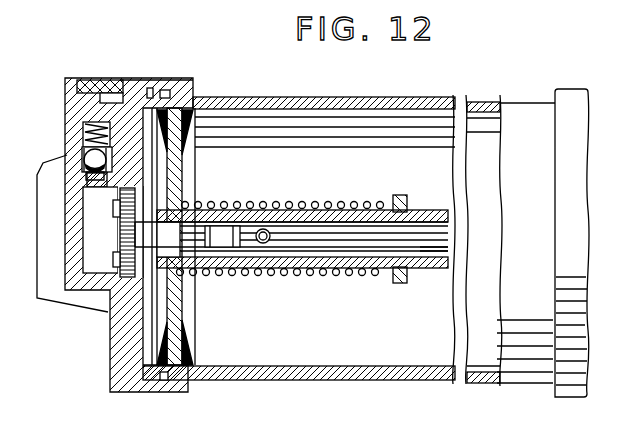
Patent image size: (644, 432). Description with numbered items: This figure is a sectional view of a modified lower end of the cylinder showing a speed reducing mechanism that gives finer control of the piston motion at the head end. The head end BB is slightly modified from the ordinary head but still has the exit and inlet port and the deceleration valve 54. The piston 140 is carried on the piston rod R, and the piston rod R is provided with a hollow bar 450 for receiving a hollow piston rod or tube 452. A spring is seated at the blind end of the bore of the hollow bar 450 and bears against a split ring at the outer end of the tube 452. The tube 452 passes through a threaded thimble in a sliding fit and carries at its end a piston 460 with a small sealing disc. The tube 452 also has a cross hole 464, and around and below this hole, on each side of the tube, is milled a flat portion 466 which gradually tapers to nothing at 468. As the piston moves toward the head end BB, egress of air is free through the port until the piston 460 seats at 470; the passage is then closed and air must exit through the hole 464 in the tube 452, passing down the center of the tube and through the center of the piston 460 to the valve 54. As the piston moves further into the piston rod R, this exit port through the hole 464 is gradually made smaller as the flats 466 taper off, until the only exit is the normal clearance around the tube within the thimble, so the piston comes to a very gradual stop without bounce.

The head end BB is at (150, 82).
The air cushion valve 54 is at (80, 155).
The piston 140 is at (168, 313).
The hollow bar 450 is at (356, 226).
The hollow piston rod or tube 452 is at (426, 244).
The piston 460 is at (112, 262).
The cross hole 464 is at (265, 244).
The flat portion 466 is at (232, 240).
The taper end 468 is at (166, 232).
The seat 470 is at (118, 237).
The piston rod R is at (289, 215).